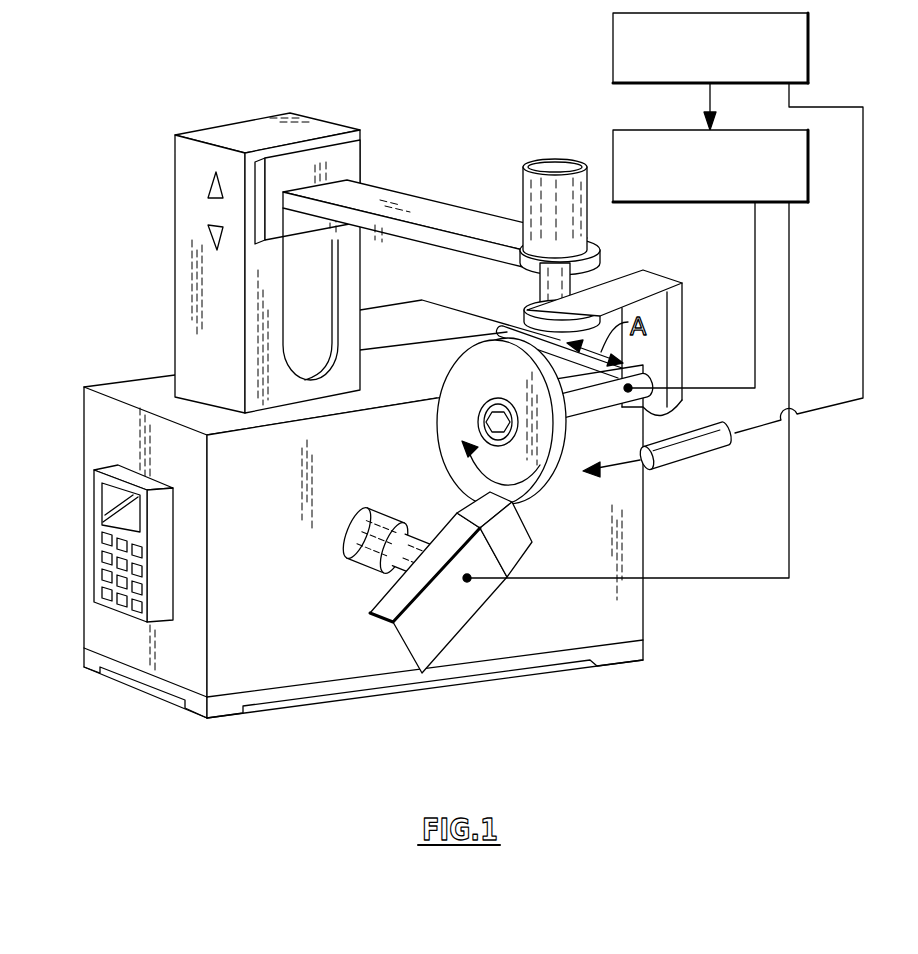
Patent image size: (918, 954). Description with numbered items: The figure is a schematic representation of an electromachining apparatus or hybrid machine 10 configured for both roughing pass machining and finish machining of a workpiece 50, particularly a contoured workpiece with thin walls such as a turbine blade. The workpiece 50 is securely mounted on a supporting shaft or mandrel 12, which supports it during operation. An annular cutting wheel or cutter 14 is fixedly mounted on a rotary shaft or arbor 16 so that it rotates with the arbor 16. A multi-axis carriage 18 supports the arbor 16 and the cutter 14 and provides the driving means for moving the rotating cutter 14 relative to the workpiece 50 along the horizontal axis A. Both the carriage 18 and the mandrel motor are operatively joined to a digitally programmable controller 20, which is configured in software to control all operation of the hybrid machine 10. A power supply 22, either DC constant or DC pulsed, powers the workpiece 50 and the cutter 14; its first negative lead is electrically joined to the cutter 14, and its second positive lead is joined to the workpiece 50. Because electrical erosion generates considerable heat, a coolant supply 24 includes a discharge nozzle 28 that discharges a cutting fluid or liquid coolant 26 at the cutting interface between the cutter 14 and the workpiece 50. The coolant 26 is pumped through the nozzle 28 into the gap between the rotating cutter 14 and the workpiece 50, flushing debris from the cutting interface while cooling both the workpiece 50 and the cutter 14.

The hybrid machine 10 is at (266, 507).
The mandrel 12 is at (344, 534).
The cutter 14 is at (447, 436).
The arbor 16 is at (583, 398).
The multi-axis carriage 18 is at (166, 168).
The digitally programmable controller 20 is at (95, 567).
The power supply 22 is at (612, 135).
The coolant supply 24 is at (612, 47).
The coolant 26 is at (618, 468).
The discharge nozzle 28 is at (682, 452).
The workpiece 50 is at (528, 600).